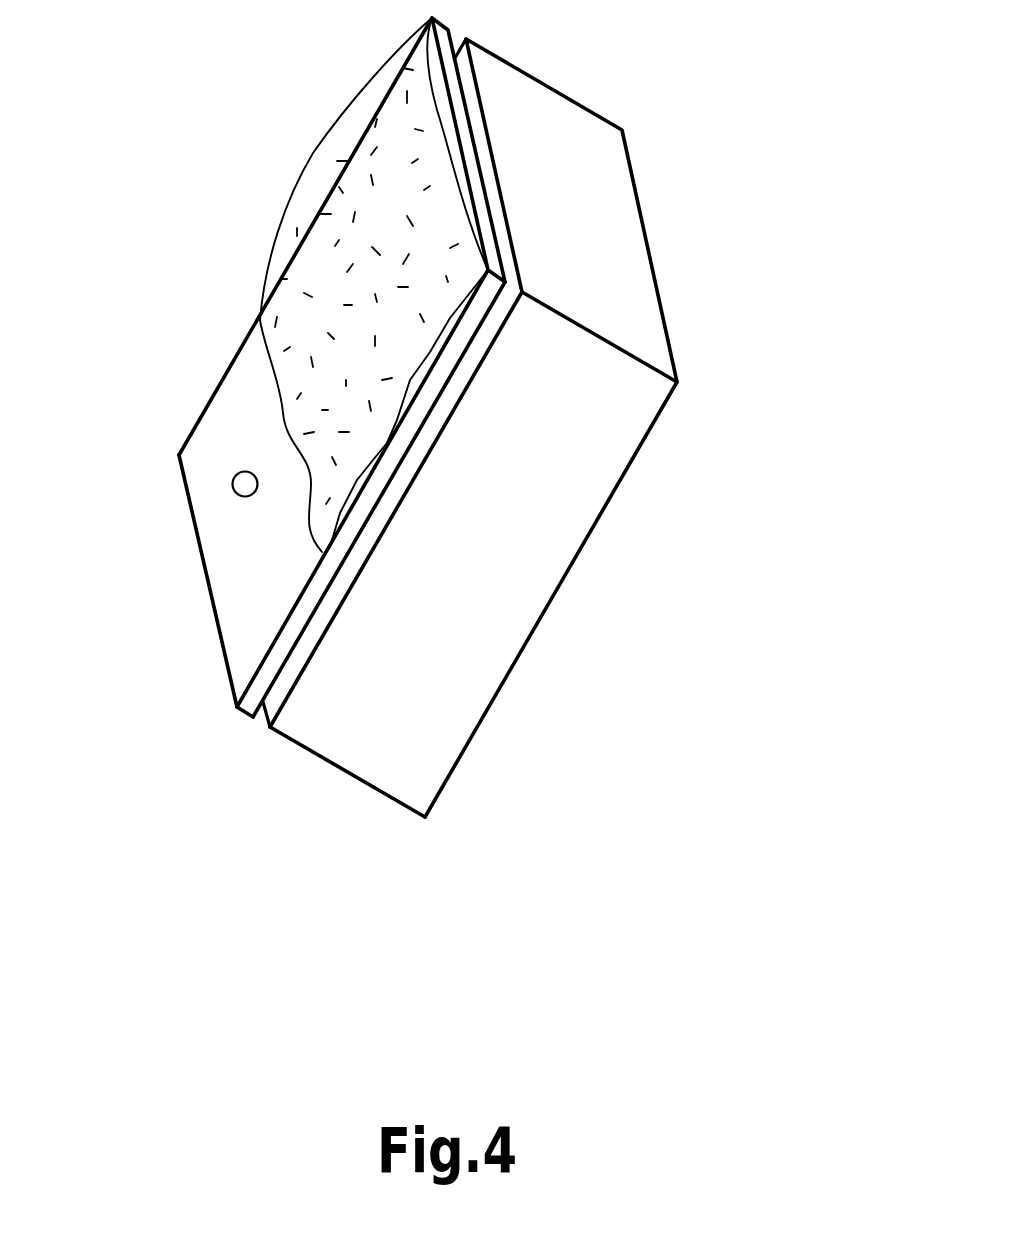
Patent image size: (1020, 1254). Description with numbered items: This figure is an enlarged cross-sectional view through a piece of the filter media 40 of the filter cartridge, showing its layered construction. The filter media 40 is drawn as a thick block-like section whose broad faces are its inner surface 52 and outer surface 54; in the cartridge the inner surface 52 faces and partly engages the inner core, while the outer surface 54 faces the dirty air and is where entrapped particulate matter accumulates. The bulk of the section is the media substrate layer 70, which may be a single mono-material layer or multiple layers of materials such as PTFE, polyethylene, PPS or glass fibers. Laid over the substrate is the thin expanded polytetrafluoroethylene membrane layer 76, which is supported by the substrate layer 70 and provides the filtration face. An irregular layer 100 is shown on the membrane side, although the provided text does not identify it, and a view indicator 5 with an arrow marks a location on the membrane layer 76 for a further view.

The filter media 40 is at (432, 458).
The inner surface 52 is at (506, 682).
The outer surface 54 is at (245, 390).
The media substrate layer 70 is at (333, 765).
The expanded polytetrafluoroethylene (ePTFE) membrane layer 76 is at (241, 571).
The cushion layer 100 is at (328, 163).
The section view indicator for FIG. 5 is at (240, 486).